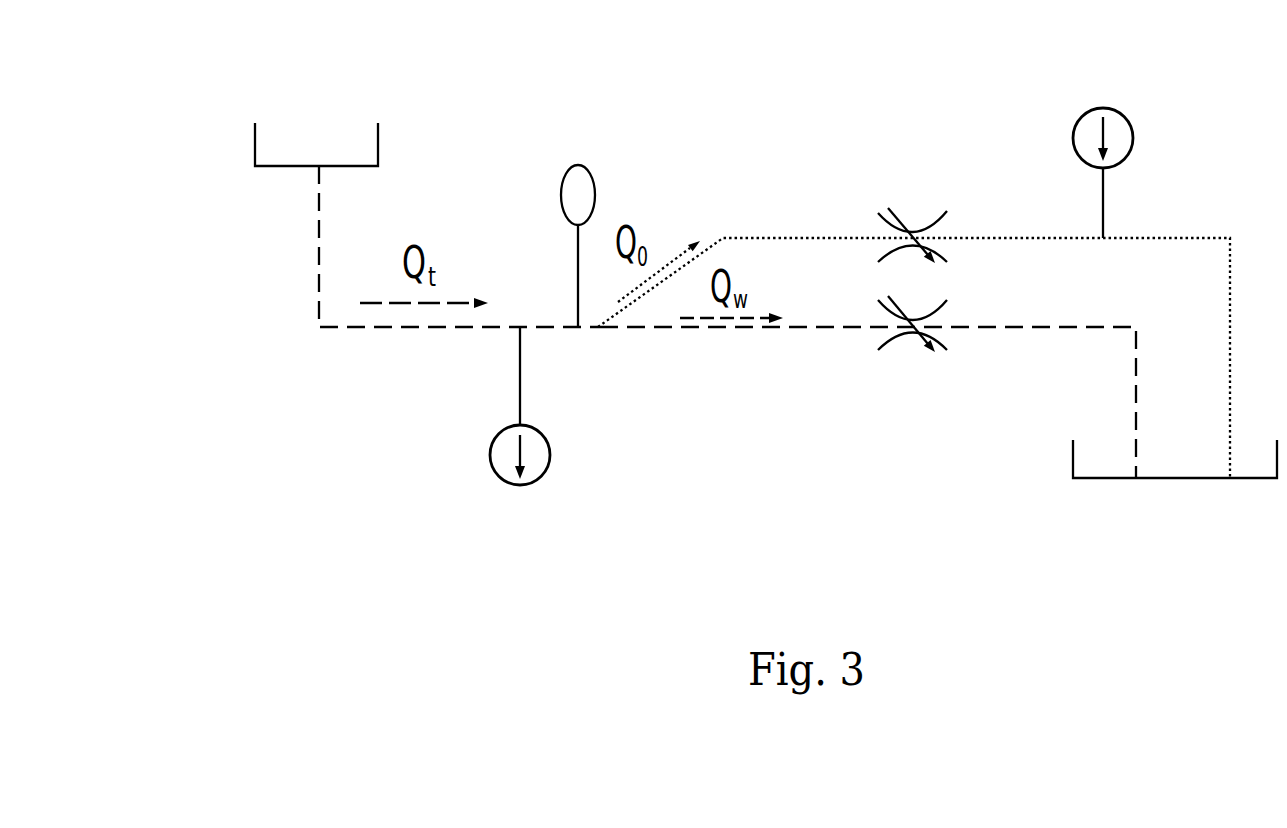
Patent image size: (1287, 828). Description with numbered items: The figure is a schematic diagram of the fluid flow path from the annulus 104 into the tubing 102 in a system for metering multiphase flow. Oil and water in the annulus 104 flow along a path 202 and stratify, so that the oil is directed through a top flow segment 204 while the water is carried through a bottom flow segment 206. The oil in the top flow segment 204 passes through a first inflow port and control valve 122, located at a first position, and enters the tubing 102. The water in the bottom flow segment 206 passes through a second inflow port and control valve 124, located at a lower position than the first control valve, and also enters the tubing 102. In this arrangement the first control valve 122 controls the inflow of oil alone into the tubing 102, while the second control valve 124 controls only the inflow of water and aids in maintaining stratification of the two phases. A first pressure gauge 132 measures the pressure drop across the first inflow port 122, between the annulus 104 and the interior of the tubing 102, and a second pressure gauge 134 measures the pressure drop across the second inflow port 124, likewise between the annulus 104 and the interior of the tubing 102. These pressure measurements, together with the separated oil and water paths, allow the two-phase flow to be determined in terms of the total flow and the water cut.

The tubing 102 is at (1180, 480).
The annulus 104 is at (320, 134).
The first inflow port and control valve 122 is at (927, 230).
The second inflow port and control valve 124 is at (940, 345).
The first pressure gauge 132 is at (1131, 121).
The second pressure gauge 134 is at (500, 460).
The flow path 202 is at (318, 247).
The top flow segment 204 is at (766, 236).
The bottom flow segment 206 is at (818, 329).